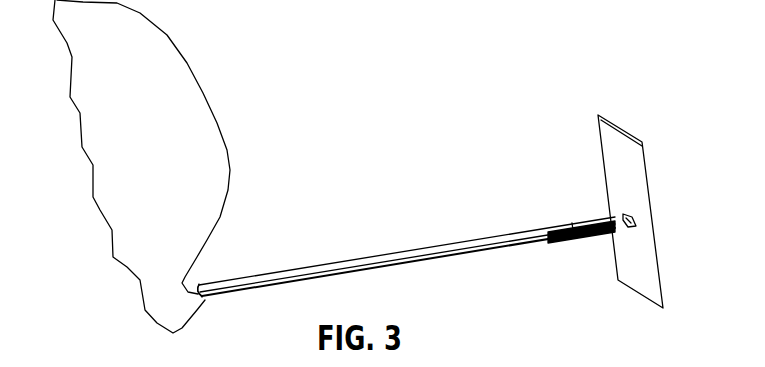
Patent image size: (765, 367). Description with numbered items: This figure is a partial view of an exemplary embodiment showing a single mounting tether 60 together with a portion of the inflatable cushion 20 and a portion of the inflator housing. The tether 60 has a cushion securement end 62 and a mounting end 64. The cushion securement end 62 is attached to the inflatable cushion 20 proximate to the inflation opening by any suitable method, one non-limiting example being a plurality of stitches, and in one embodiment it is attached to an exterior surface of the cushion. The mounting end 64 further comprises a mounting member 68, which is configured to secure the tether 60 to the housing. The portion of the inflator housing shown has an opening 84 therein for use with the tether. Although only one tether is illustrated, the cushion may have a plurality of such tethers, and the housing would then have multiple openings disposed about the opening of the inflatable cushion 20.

The vehicle body structure 20 is at (215, 122).
The mounting tether 60 is at (341, 262).
The cushion securement end 62 is at (198, 285).
The mounting end 64 is at (551, 211).
The mounting member 68 is at (563, 241).
The opening 84 is at (623, 218).